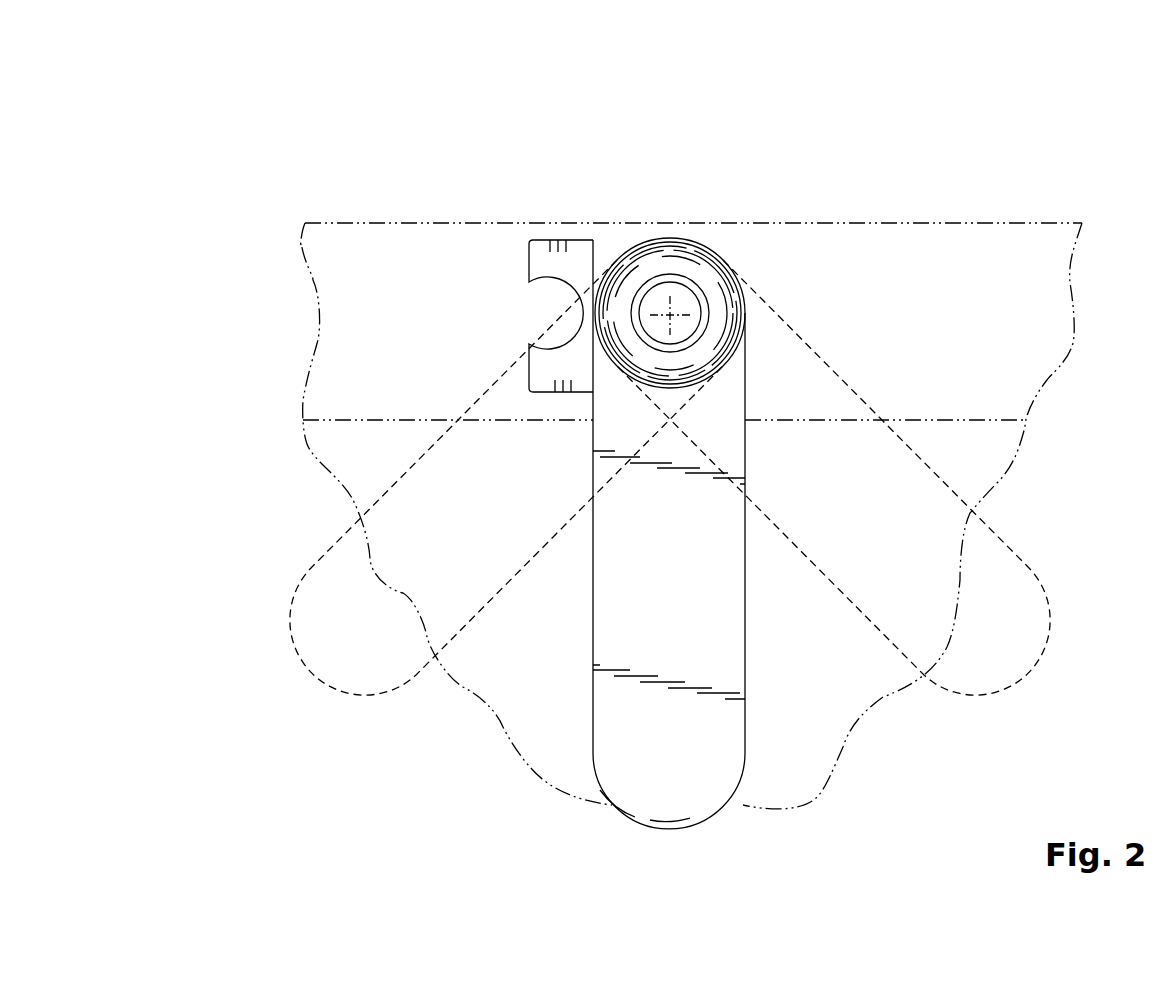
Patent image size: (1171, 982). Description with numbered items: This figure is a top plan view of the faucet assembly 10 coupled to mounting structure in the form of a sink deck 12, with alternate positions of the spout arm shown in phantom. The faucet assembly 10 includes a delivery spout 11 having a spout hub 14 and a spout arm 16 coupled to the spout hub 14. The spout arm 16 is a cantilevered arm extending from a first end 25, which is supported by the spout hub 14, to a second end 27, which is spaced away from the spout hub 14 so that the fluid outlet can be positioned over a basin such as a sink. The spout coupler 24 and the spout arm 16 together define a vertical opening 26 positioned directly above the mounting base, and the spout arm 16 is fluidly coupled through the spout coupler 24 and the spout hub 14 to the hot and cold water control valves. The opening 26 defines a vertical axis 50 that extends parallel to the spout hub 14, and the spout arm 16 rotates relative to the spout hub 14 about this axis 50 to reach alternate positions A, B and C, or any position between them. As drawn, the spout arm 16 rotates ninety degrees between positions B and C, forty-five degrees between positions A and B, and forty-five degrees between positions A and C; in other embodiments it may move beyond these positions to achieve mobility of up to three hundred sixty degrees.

The faucet assembly 10 is at (656, 490).
The delivery spout 11 is at (671, 235).
The sink deck 12 is at (921, 208).
The spout hub 14 is at (641, 206).
The spout arm 16 is at (652, 597).
The spout coupler 24 is at (746, 253).
The first end 25 is at (612, 246).
The vertical opening 26 is at (681, 290).
The second end 27 is at (612, 823).
The vertical axis 50 is at (688, 333).
The position A is at (708, 830).
The position B is at (278, 635).
The position C is at (1063, 645).